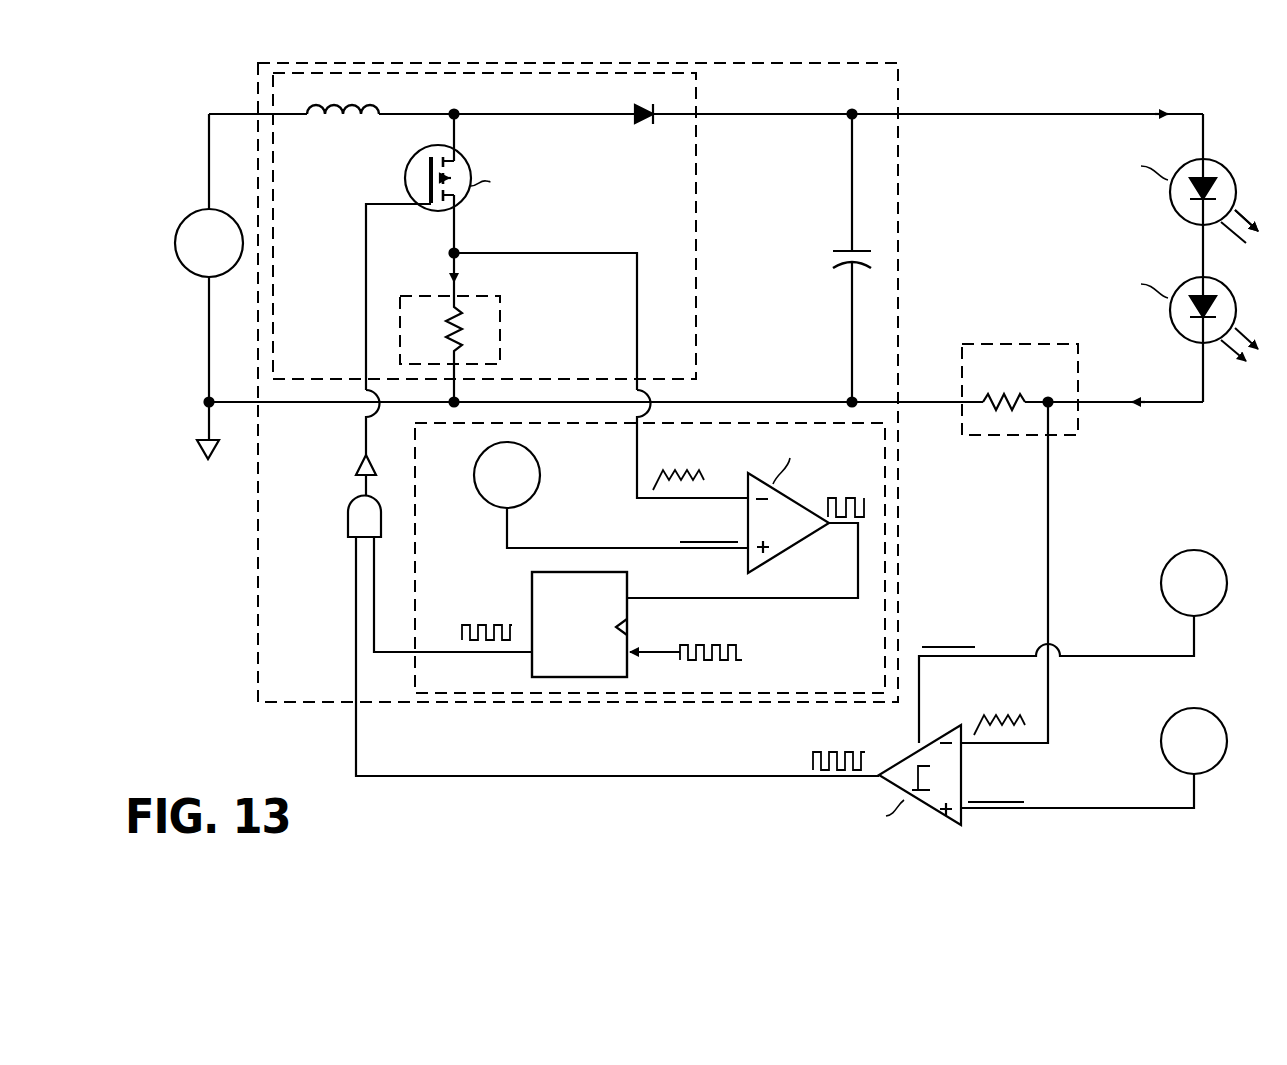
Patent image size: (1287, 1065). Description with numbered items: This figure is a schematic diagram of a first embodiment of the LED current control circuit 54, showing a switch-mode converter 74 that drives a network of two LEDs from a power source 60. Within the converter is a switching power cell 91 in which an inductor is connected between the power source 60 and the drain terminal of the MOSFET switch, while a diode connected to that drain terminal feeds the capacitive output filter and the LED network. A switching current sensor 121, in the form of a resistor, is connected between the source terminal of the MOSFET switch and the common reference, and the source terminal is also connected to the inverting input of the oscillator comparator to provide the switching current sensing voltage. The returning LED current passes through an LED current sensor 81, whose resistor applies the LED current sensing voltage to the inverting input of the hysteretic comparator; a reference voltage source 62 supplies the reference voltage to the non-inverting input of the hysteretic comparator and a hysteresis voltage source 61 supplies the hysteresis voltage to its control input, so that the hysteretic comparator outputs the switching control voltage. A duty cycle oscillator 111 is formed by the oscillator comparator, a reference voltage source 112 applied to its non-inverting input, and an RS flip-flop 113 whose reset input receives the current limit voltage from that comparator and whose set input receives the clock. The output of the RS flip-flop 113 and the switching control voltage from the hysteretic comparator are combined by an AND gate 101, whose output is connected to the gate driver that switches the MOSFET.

The LED current control circuit 54 is at (226, 672).
The power source 60 is at (186, 216).
The switch-mode converter 74 is at (899, 193).
The switching power cell 91 is at (697, 207).
The switching current sensor 121 is at (501, 331).
The LED current sensor 81 is at (1021, 343).
The AND gate 101 is at (348, 518).
The duty cycle oscillator 111 is at (414, 670).
The reference voltage source 112 is at (478, 478).
The RS flip-flop 113 is at (532, 668).
The hysteresis voltage source 61 is at (1228, 592).
The reference voltage source 62 is at (1228, 750).